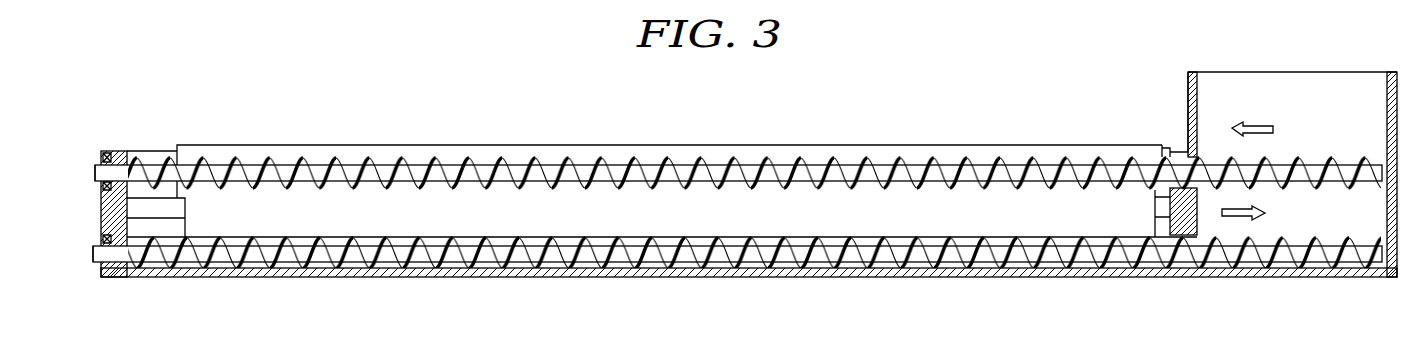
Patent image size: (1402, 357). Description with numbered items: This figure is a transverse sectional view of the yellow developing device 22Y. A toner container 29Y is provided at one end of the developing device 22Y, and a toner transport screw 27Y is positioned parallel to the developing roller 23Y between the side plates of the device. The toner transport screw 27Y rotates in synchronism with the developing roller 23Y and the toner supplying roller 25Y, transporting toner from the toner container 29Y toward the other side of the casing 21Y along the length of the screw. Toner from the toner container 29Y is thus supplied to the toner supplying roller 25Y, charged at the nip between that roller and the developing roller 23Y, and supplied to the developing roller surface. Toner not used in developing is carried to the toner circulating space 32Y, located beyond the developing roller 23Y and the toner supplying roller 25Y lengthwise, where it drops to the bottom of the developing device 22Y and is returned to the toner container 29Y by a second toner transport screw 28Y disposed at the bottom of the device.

The casing 21Y is at (592, 278).
The yellow developing device 22Y is at (1097, 132).
The developing roller 23Y is at (516, 143).
The toner supplying roller 25Y is at (912, 228).
The toner transport screw 27Y is at (818, 148).
The toner transport screw 28Y is at (1038, 257).
The toner container 29Y is at (1330, 87).
The toner circulating space 32Y is at (132, 245).